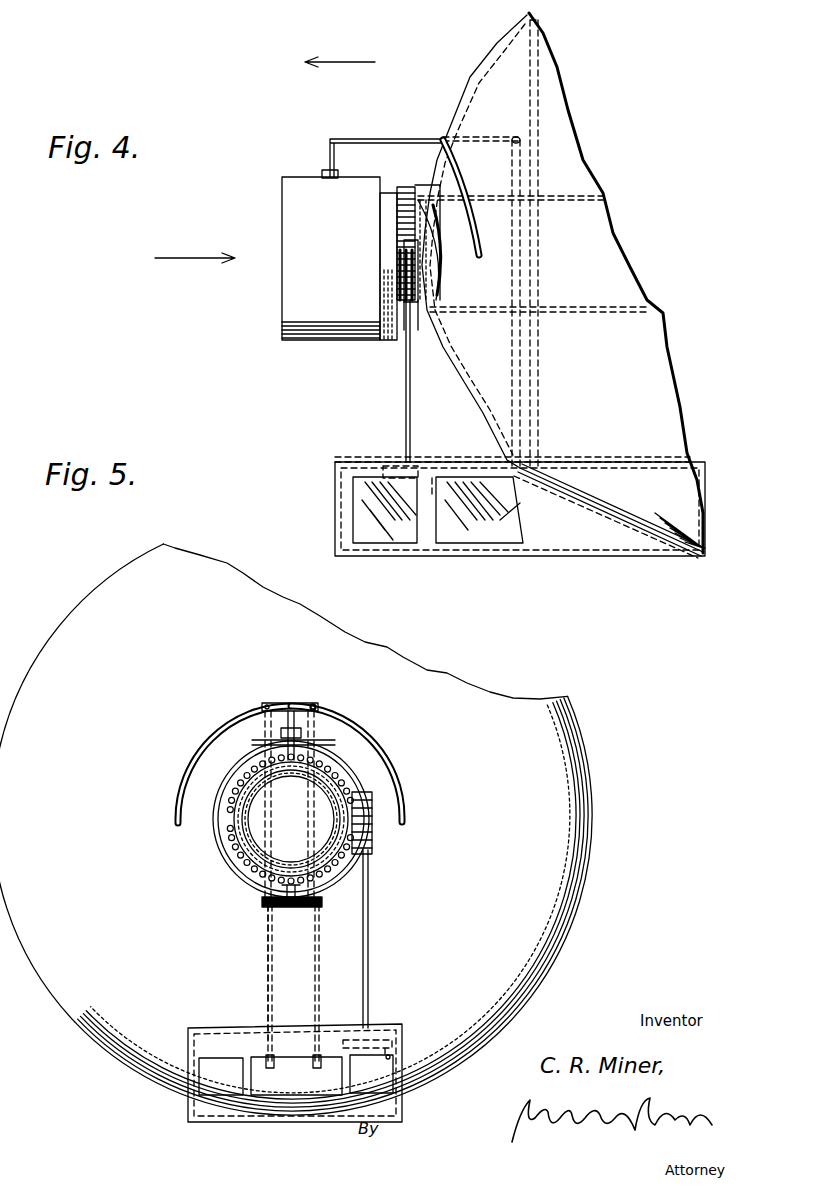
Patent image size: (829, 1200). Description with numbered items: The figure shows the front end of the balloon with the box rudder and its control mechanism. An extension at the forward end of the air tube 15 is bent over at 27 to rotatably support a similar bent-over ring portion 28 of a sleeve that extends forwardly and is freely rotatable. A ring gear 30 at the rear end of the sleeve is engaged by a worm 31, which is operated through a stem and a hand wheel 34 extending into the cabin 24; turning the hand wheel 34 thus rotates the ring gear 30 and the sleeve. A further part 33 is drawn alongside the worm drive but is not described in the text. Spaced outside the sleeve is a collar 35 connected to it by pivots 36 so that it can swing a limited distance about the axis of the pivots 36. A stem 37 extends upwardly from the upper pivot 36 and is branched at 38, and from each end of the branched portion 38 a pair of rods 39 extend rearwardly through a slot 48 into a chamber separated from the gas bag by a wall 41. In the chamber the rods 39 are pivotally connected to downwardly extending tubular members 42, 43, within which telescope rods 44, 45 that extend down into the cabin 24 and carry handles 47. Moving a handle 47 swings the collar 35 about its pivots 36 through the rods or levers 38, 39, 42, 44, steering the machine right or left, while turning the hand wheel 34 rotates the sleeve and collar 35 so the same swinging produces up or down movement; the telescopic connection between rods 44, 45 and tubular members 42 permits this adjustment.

In FIG. 4, the air tube 15 is at (578, 210).
In FIG. 4, the cabin 24 is at (447, 552).
In FIG. 5, the cabin 24 is at (222, 1110).
In FIG. 4, the bent-over portion 27 is at (403, 187).
In FIG. 4, the bent-over ring portion 28 is at (427, 200).
In FIG. 4, the ring gear 30 is at (402, 328).
In FIG. 4, the worm 31 is at (418, 268).
In FIG. 5, the worm 31 is at (372, 845).
In FIG. 4, the rod 33 is at (408, 398).
In FIG. 4, the hand wheel 34 is at (388, 468).
In FIG. 5, the hand wheel 34 is at (408, 1012).
In FIG. 4, the collar 35 is at (292, 190).
In FIG. 4, the pivots 36 is at (322, 164).
In FIG. 5, the pivots 36 is at (263, 703).
In FIG. 5, the stem 37 is at (291, 705).
In FIG. 5, the branched portion 38 is at (314, 703).
In FIG. 4, the rods 39 is at (383, 130).
In FIG. 4, the wall 41 is at (538, 110).
In FIG. 4, the tubular member 42 is at (520, 160).
In FIG. 5, the tubular member 42 is at (262, 717).
In FIG. 4, the tubular member 43 is at (455, 172).
In FIG. 5, the tubular member 43 is at (318, 724).
In FIG. 5, the rod 44 is at (266, 943).
In FIG. 5, the rod 45 is at (368, 943).
In FIG. 4, the handles 47 is at (495, 523).
In FIG. 5, the handles 47 is at (268, 1050).
In FIG. 5, the slot 48 is at (428, 755).